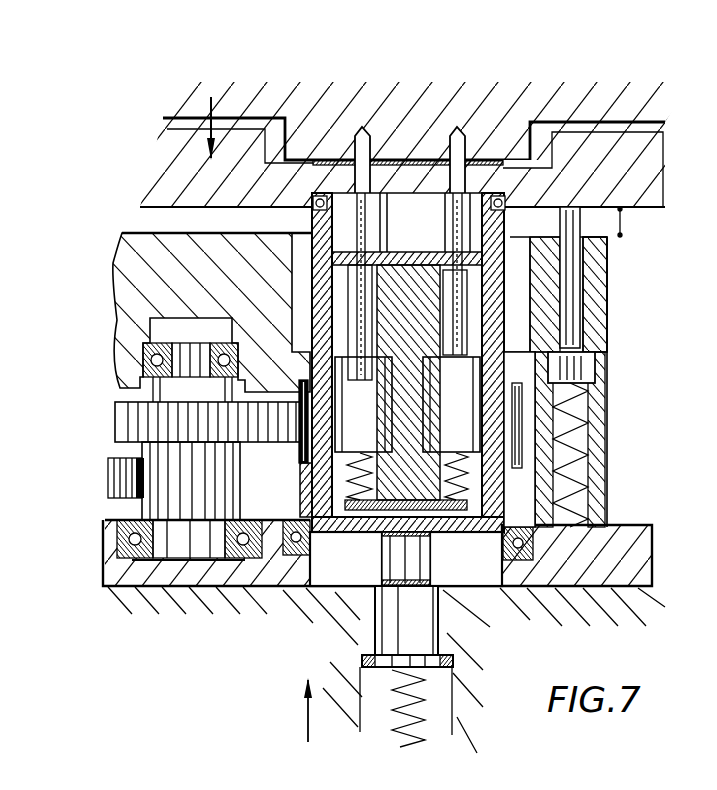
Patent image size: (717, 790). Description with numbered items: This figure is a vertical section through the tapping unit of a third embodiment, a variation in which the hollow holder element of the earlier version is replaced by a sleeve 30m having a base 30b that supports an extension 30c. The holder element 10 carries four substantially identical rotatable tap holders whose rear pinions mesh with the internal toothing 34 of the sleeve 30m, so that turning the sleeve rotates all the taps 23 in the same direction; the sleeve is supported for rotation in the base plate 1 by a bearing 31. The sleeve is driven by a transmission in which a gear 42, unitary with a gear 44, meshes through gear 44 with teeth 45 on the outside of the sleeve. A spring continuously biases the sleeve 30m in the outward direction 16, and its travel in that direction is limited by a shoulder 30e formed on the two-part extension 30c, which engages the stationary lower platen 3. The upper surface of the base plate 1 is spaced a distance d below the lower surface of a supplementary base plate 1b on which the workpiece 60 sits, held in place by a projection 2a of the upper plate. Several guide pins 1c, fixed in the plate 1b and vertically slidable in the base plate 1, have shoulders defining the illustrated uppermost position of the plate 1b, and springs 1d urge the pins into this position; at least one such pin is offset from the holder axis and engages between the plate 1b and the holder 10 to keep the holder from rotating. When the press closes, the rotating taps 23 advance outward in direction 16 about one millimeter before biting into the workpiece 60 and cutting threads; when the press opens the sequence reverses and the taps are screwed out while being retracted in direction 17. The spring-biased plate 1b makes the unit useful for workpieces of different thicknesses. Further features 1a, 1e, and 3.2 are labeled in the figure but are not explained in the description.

The base plate 1 is at (597, 290).
The column head 1a is at (593, 257).
The supplementary base plate 1b is at (593, 160).
The guide pins 1c is at (577, 257).
The springs 1d is at (582, 395).
The nut 1e is at (587, 347).
The projection 2a is at (510, 147).
The stationary lower platen 3 is at (613, 612).
The bearing 3.2 is at (530, 543).
The holder element 10 is at (427, 252).
The direction 16 is at (302, 708).
The direction 17 is at (214, 106).
The taps 23 is at (455, 212).
The base 30b is at (452, 533).
The extension 30c is at (397, 552).
The shoulder 30e is at (370, 653).
The sleeve 30m is at (503, 497).
The bearing 31 is at (316, 172).
The internal toothing 34 is at (470, 457).
The gear 42 is at (185, 478).
The gear 44 is at (120, 422).
The teeth 45 is at (287, 445).
The workpiece 60 is at (410, 158).
The distance d is at (627, 226).